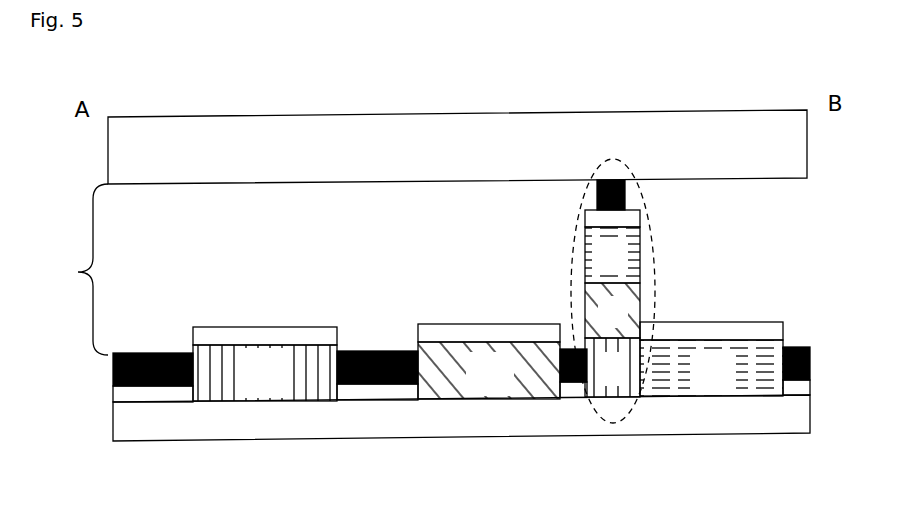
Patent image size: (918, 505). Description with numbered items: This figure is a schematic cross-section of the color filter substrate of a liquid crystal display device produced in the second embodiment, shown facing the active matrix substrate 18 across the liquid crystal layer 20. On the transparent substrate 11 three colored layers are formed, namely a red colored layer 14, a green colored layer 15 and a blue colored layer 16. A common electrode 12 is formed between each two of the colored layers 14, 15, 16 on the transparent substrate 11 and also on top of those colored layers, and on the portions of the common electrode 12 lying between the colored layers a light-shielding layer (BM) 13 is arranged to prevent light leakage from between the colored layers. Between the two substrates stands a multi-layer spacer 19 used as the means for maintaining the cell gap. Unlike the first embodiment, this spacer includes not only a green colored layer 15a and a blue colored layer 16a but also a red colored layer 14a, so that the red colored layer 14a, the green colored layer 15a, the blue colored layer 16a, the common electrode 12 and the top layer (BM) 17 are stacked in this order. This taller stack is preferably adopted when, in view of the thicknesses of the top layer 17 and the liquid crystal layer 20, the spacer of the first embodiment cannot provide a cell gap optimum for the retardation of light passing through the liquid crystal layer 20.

The transparent substrate 11 is at (810, 417).
The common electrode 12 is at (255, 327).
The light-shielding layer (BM) 13 is at (131, 353).
The red colored layer 14 is at (227, 392).
The red colored layer 14a is at (627, 392).
The green colored layer 15 is at (453, 392).
The green colored layer 15a is at (630, 293).
The blue colored layer 16 is at (755, 385).
The blue colored layer 16a is at (590, 240).
The top layer (BM) 17 is at (628, 193).
The active matrix substrate 18 is at (807, 143).
The multi-layer spacer 19 is at (608, 158).
The liquid crystal layer 20 is at (78, 272).